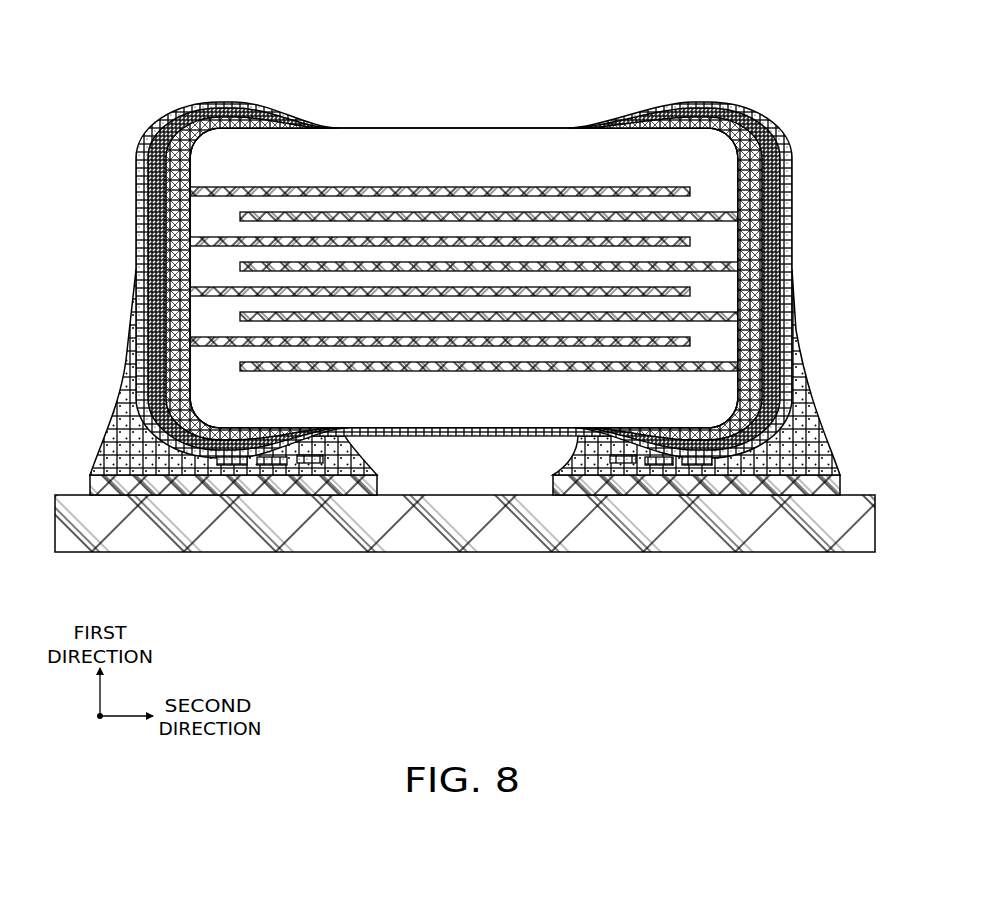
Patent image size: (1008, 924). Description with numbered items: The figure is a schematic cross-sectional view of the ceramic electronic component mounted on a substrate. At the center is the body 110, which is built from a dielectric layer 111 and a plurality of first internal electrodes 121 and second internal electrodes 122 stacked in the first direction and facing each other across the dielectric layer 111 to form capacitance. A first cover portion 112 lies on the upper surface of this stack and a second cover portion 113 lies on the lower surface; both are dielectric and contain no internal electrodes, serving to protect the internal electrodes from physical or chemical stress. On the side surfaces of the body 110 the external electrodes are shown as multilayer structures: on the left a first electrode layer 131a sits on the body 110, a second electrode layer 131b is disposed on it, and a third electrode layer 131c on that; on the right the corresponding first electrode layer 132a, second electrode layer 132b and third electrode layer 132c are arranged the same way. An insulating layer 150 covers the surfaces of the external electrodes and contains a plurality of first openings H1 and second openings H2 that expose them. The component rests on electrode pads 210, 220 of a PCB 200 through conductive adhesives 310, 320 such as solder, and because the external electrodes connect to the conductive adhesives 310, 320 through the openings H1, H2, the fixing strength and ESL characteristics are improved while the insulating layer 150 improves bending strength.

The body 110 is at (570, 128).
The dielectric layer 111 is at (487, 203).
The first cover portion 112 is at (332, 152).
The second cover portion 113 is at (463, 403).
The first internal electrode 121 is at (380, 187).
The second internal electrode 122 is at (433, 213).
The first electrode layer 131a is at (180, 254).
The second electrode layer 131b is at (158, 276).
The third electrode layer 131c is at (146, 301).
The first electrode layer 132a is at (752, 254).
The second electrode layer 132b is at (770, 282).
The third electrode layer 132c is at (786, 308).
The insulating layer 150 is at (497, 437).
The PCB 200 is at (795, 543).
The electrode pad 210 is at (168, 488).
The electrode pad 220 is at (755, 488).
The conductive adhesive 310 is at (148, 395).
The conductive adhesive 320 is at (782, 388).
The first opening H1 is at (292, 458).
The second opening H2 is at (640, 457).